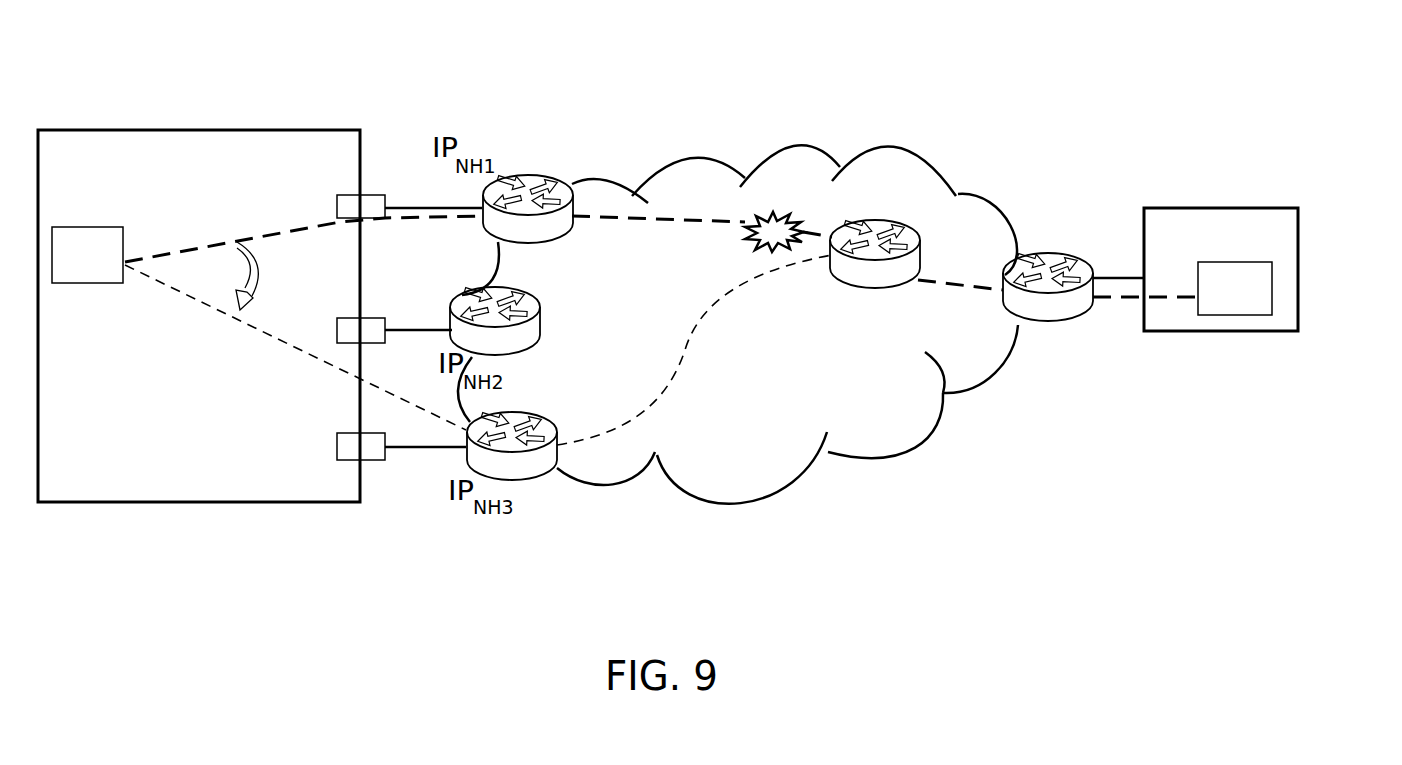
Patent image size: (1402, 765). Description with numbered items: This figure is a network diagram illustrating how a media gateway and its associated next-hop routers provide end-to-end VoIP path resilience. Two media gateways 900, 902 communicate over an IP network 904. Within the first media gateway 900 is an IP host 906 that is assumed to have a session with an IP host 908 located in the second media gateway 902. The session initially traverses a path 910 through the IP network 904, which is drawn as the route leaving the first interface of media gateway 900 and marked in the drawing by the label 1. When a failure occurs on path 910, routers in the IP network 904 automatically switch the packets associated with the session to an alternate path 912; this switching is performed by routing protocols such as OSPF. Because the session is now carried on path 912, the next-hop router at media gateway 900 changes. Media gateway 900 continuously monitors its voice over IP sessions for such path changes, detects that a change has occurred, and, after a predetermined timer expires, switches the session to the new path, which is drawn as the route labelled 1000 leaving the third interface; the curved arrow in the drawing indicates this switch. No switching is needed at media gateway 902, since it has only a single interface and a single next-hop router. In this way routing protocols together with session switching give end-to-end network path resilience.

The media gateway 900 is at (181, 128).
The media gateway 902 is at (1266, 207).
The IP network 904 is at (925, 150).
The IP host 906 is at (91, 226).
The IP host 908 is at (1272, 275).
The path 910 is at (684, 218).
The path 912 is at (748, 282).
The first path from IPV1 via interface IPI1 1 is at (303, 237).
The second path from IPV1 via interface IPI3 1000 is at (295, 347).